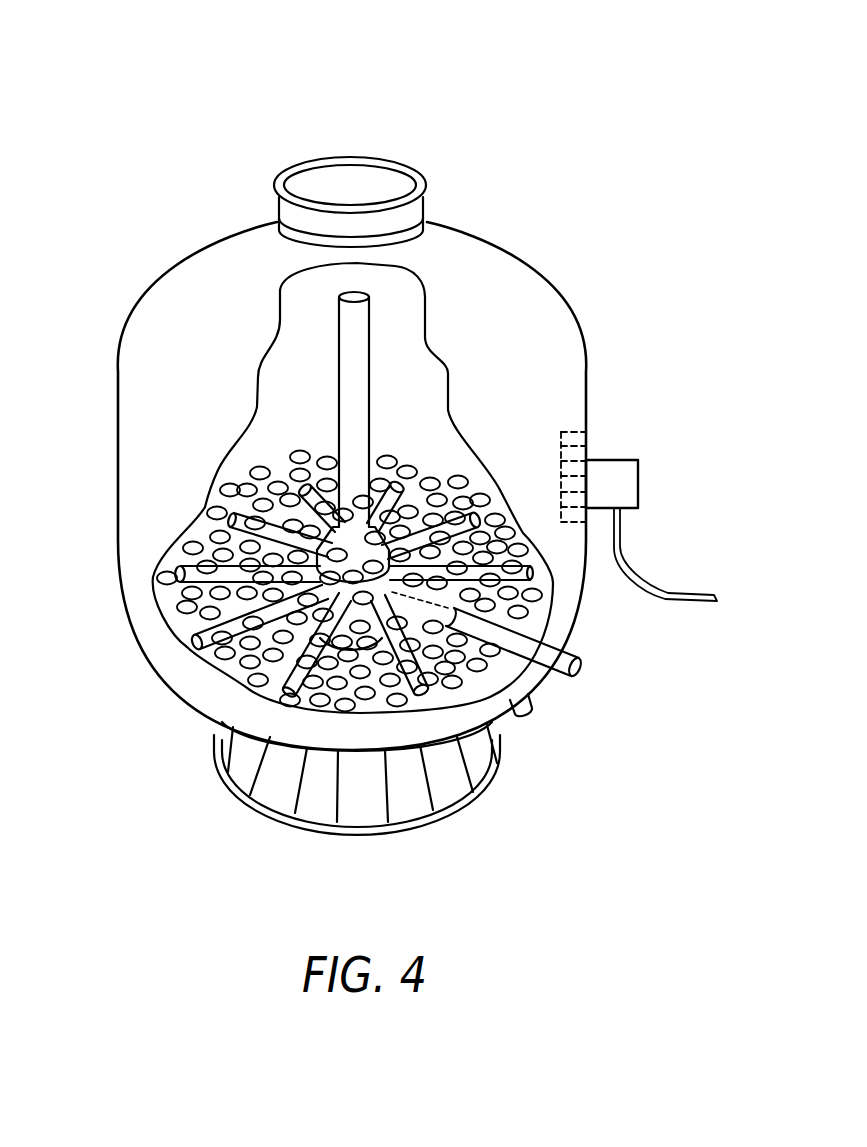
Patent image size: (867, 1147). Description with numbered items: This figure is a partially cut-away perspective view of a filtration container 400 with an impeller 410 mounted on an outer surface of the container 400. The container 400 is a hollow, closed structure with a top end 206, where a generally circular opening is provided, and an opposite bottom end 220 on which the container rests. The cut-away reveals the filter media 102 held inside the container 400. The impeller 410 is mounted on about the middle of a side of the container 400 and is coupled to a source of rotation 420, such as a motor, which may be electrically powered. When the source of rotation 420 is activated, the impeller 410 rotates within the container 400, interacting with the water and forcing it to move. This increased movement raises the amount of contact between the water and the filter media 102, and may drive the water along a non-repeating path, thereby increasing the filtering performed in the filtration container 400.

The filtration container 400 is at (528, 90).
The top end 206 is at (247, 190).
The filter media 102 is at (212, 492).
The bottom end 220 is at (189, 768).
The impeller 410 is at (561, 432).
The source of rotation 420 is at (638, 470).